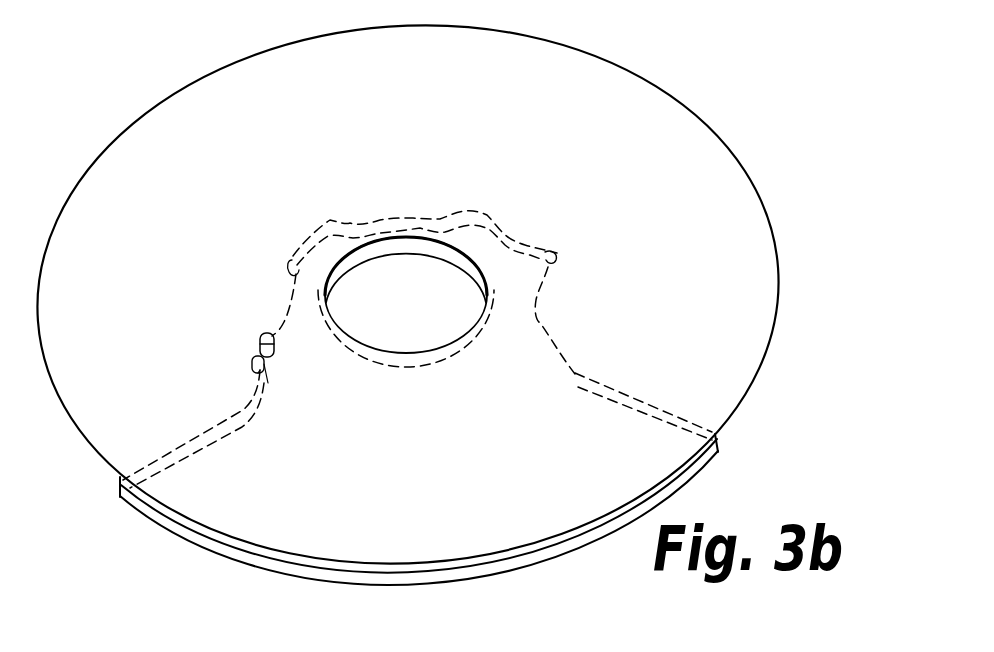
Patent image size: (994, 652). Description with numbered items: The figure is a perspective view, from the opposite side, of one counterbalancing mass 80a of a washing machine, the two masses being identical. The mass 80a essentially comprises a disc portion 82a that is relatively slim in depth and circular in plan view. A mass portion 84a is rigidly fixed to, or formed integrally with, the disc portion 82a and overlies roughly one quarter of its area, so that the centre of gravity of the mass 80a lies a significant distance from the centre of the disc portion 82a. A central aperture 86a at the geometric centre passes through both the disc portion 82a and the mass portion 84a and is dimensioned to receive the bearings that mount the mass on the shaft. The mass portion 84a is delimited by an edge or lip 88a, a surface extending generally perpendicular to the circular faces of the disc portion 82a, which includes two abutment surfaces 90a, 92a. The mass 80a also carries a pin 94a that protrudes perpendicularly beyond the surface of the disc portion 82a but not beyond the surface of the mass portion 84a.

The counterbalancing mass 80a is at (698, 87).
The disc portion 82a is at (734, 382).
The mass portion 84a is at (510, 370).
The central aperture 86a is at (415, 247).
The edge or lip 88a is at (329, 225).
The abutment surface 90a is at (255, 343).
The abutment surface 92a is at (556, 246).
The pin 94a is at (266, 333).